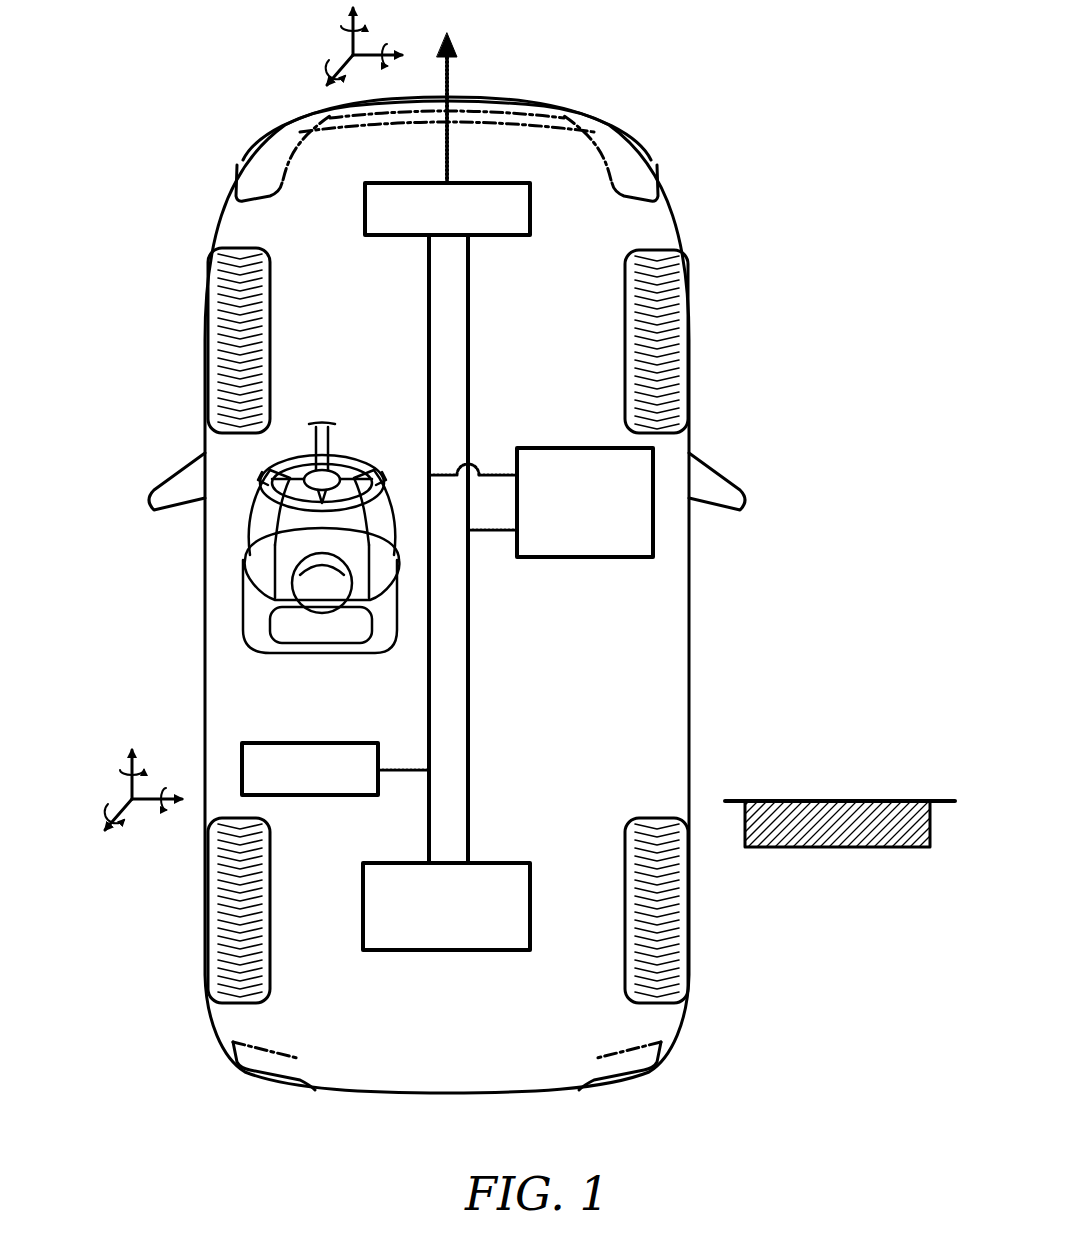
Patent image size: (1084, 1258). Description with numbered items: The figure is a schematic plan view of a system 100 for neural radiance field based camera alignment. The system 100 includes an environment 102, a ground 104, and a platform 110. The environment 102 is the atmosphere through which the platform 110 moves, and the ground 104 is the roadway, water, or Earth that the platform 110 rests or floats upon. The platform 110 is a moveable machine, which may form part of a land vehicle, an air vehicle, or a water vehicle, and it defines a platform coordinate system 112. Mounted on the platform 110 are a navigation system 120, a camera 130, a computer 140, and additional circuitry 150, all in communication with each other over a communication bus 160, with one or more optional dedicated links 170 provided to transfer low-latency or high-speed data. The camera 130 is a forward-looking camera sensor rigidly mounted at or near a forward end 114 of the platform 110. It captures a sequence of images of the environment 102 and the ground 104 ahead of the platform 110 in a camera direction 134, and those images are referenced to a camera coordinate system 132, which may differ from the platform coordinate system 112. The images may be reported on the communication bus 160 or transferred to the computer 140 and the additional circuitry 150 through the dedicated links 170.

The system 100 is at (210, 143).
The environment 102 is at (790, 205).
The ground 104 is at (842, 801).
The platform 110 is at (206, 318).
The platform coordinate system 112 is at (128, 790).
The forward end 114 is at (557, 112).
The navigation system 120 is at (297, 743).
The camera 130 is at (365, 210).
The camera coordinate system 132 is at (343, 40).
The camera direction 134 is at (452, 72).
The computer 140 is at (580, 448).
The additional circuitry 150 is at (363, 910).
The communication bus 160 is at (427, 322).
The dedicated links 170 is at (470, 322).